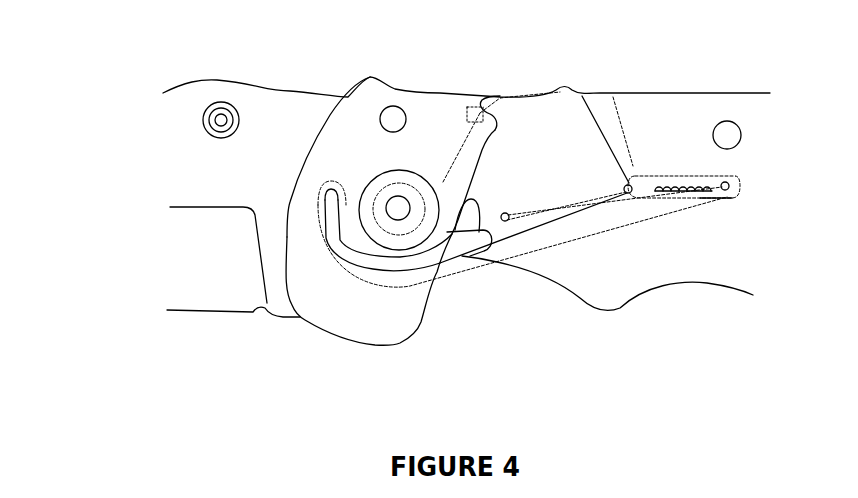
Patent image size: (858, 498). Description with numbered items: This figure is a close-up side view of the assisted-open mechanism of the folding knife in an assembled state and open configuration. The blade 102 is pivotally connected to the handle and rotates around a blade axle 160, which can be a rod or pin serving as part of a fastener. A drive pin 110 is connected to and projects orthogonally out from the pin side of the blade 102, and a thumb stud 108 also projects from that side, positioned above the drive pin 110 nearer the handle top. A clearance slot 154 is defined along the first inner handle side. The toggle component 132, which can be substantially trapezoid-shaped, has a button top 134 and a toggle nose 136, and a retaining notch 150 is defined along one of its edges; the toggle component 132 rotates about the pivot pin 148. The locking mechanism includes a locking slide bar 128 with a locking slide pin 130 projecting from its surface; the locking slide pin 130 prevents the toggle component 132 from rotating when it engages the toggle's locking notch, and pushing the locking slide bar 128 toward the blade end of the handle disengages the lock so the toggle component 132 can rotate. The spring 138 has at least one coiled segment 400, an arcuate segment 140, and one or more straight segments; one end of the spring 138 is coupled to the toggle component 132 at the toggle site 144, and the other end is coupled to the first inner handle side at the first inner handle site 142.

The blade 102 is at (289, 94).
The thumb stud 108 is at (222, 102).
The drive pin 110 is at (330, 203).
The locking slide bar 128 is at (472, 113).
The locking slide pin 130 is at (481, 113).
The toggle component 132 is at (591, 131).
The button top 134 is at (562, 97).
The toggle nose 136 is at (480, 238).
The spring 138 is at (703, 197).
The arcuate segment 140 is at (630, 192).
The first inner handle site 142 is at (728, 180).
The toggle site 144 is at (507, 222).
The pivot pin 148 is at (632, 182).
The retaining notch 150 is at (490, 242).
The clearance slot 154 is at (372, 266).
The blade axle 160 is at (395, 208).
The coiled segment 400 is at (680, 181).